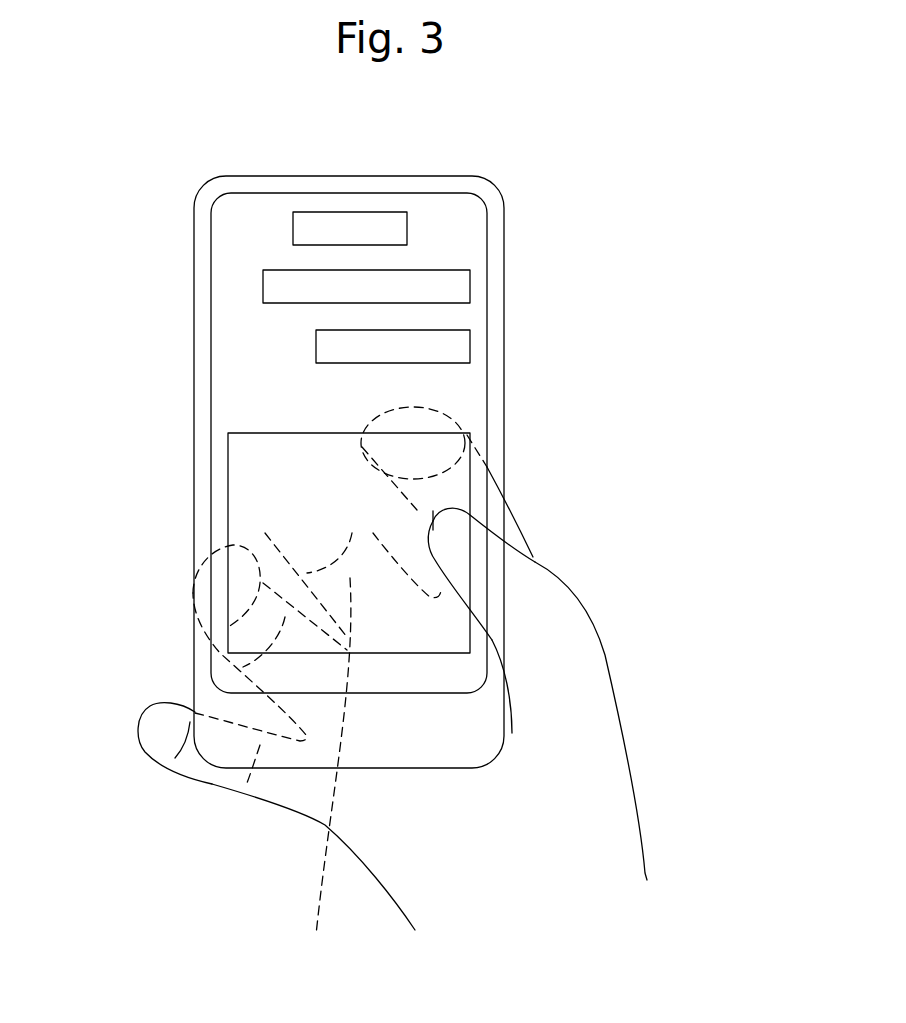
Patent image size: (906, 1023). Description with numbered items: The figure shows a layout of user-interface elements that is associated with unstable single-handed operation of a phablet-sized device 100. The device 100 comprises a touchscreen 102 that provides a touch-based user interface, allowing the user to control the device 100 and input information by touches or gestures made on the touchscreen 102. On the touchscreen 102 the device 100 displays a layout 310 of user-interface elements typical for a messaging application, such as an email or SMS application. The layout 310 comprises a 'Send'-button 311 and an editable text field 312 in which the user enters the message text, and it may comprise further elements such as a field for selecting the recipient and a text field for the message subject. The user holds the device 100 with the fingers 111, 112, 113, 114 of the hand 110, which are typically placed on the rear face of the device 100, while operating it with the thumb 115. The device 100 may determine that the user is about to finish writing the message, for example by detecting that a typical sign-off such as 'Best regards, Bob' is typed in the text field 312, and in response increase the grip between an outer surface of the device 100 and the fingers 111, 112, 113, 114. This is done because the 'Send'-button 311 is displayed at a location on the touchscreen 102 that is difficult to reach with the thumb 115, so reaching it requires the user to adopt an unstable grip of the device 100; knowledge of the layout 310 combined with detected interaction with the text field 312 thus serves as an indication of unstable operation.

The device 100 is at (168, 142).
The touchscreen 102 is at (488, 245).
The layout 310 is at (468, 382).
The 'Send'-button 311 is at (342, 212).
The editable text field 312 is at (225, 462).
The hand 110 is at (660, 698).
The finger 111 is at (479, 459).
The finger 112 is at (313, 773).
The finger 113 is at (193, 593).
The finger 114 is at (145, 712).
The thumb 115 is at (522, 582).